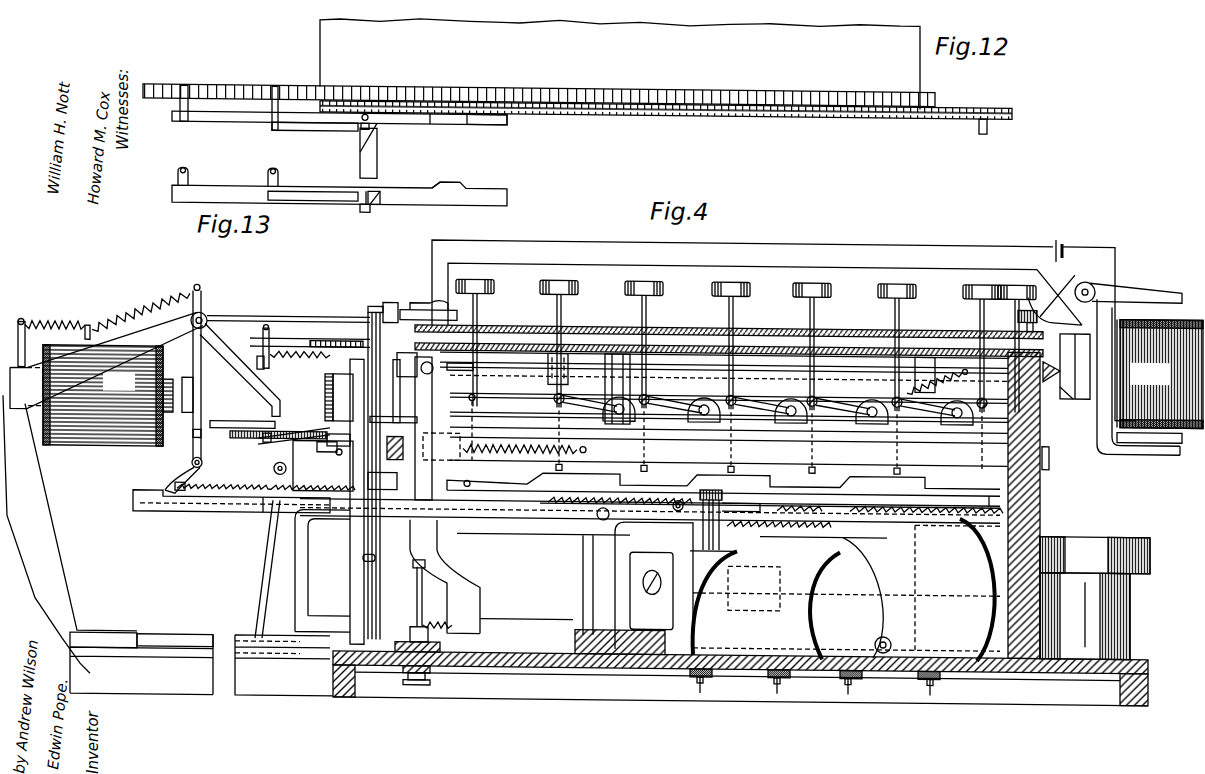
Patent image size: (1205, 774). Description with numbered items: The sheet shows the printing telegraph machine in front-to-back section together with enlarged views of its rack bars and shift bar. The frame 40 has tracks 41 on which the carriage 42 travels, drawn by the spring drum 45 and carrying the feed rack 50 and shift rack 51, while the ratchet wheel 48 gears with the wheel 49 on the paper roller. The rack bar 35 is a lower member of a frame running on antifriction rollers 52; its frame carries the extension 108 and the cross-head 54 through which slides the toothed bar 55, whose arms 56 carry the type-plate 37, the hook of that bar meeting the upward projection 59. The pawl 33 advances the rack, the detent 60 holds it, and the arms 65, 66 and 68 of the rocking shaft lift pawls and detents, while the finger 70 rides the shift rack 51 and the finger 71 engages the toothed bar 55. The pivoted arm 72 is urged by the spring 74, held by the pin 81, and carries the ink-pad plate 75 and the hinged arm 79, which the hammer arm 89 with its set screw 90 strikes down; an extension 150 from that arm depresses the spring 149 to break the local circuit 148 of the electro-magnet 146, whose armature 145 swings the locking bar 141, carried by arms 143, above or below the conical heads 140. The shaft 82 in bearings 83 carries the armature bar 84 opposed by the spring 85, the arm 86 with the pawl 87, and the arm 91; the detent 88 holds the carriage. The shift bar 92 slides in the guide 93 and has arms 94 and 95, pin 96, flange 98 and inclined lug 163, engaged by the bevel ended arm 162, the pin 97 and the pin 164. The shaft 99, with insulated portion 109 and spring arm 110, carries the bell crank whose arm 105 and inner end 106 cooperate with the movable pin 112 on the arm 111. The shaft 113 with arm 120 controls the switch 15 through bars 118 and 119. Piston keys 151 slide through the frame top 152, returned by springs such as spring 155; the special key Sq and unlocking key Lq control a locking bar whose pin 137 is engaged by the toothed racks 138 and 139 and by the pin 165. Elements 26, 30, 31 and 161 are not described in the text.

In FIG. 4, the local circuit 148 is at (788, 243).
In FIG. 4, the special key Sq is at (1027, 291).
In FIG. 4, the unlocking key Lq is at (1031, 313).
In FIG. 4, the piston keys 151 is at (643, 308).
In FIG. 4, the top of the frame 152 is at (704, 325).
In FIG. 4, the arms 56 is at (468, 330).
In FIG. 4, the antifriction rollers 52 is at (568, 402).
In FIG. 4, the pins 137 is at (714, 448).
In FIG. 4, the spring 155 is at (940, 390).
In FIG. 12, the flange 98 is at (455, 124).
In FIG. 13, the flange 98 is at (446, 183).
In FIG. 4, the flange 98 is at (463, 479).
In FIG. 4, the pin 165 is at (986, 478).
In FIG. 4, the toothed rack 138 is at (770, 491).
In FIG. 4, the pawl 33 is at (786, 514).
In FIG. 12, the shift rack 51 is at (606, 113).
In FIG. 4, the shift rack 51 is at (528, 519).
In FIG. 4, the detent 60 is at (707, 492).
In FIG. 4, the arm 66 is at (742, 487).
In FIG. 4, the carriage 42 is at (561, 593).
In FIG. 4, the drum 30 is at (845, 604).
In FIG. 4, the rack bar 35 is at (823, 598).
In FIG. 4, the drum 31 is at (957, 589).
In FIG. 4, the arm 65 is at (767, 584).
In FIG. 4, the finger 70 is at (432, 505).
In FIG. 4, the frame 40 is at (1040, 502).
In FIG. 4, the switch 15 is at (440, 647).
In FIG. 4, the arm 120 is at (412, 627).
In FIG. 4, the shaft 113 is at (417, 585).
In FIG. 4, the arm 79 is at (368, 317).
In FIG. 4, the set screw 90 is at (376, 307).
In FIG. 4, the arm 72 is at (381, 535).
In FIG. 4, the spring 74 is at (370, 562).
In FIG. 4, the pin 81 is at (389, 390).
In FIG. 4, the bar 118 is at (423, 447).
In FIG. 4, the finger 71 is at (405, 388).
In FIG. 4, the insulated spring arm 110 is at (395, 417).
In FIG. 4, the toothed rack 139 is at (383, 480).
In FIG. 4, the arm 68 is at (460, 376).
In FIG. 4, the upward projection 59 is at (460, 425).
In FIG. 4, the spring 149 is at (407, 308).
In FIG. 4, the extension 150 is at (398, 303).
In FIG. 4, the hammer arm 89 is at (292, 318).
In FIG. 4, the type-plate 37 is at (320, 340).
In FIG. 4, the plate 75 is at (300, 355).
In FIG. 4, the toothed bar 55 is at (257, 364).
In FIG. 4, the wheel 49 is at (325, 377).
In FIG. 4, the cross-head 54 is at (343, 397).
In FIG. 4, the inner end of the bell crank 106 is at (346, 419).
In FIG. 4, the arm 105 is at (300, 438).
In FIG. 4, the extension 108 is at (323, 465).
In FIG. 4, the insulated portion 109 is at (327, 452).
In FIG. 4, the shaft 99 is at (348, 453).
In FIG. 4, the detent 88 is at (275, 468).
In FIG. 12, the shift bar 92 is at (243, 123).
In FIG. 13, the shift bar 92 is at (388, 200).
In FIG. 4, the shift bar 92 is at (215, 509).
In FIG. 12, the feed rack 50 is at (348, 92).
In FIG. 4, the feed rack 50 is at (266, 482).
In FIG. 13, the arm 94 is at (186, 158).
In FIG. 4, the arm 94 is at (191, 481).
In FIG. 13, the arm 95 is at (276, 158).
In FIG. 4, the arm 95 is at (262, 502).
In FIG. 4, the guide 93 is at (270, 512).
In FIG. 4, the tracks 41 is at (245, 637).
In FIG. 4, the magnet coil 26 is at (108, 395).
In FIG. 4, the spring 161 is at (65, 321).
In FIG. 4, the bearings 83 is at (106, 360).
In FIG. 4, the spring 85 is at (162, 301).
In FIG. 4, the shaft 82 is at (205, 320).
In FIG. 4, the arm 91 is at (238, 368).
In FIG. 4, the armature bar 84 is at (193, 400).
In FIG. 4, the pawl 87 is at (177, 470).
In FIG. 4, the arm 86 is at (200, 437).
In FIG. 4, the arm 111 is at (262, 424).
In FIG. 4, the movable pin 112 is at (250, 435).
In FIG. 4, the ratchet wheel 48 is at (270, 446).
In FIG. 4, the electro-magnet 146 is at (1160, 382).
In FIG. 4, the arms 143 is at (1100, 300).
In FIG. 4, the armature 145 is at (1172, 280).
In FIG. 4, the conical heads 140 is at (1062, 361).
In FIG. 4, the locking bar 141 is at (1068, 392).
In FIG. 4, the bar 119 is at (1049, 455).
In FIG. 4, the spring drum 45 is at (1150, 550).
In FIG. 12, the pin 164 is at (990, 128).
In FIG. 12, the pin 97 is at (361, 122).
In FIG. 12, the bevel ended arm 162 is at (377, 152).
In FIG. 12, the inclined lug 163 is at (377, 123).
In FIG. 13, the inclined lug 163 is at (380, 205).
In FIG. 12, the pin 96 is at (364, 130).
In FIG. 13, the pin 96 is at (365, 213).